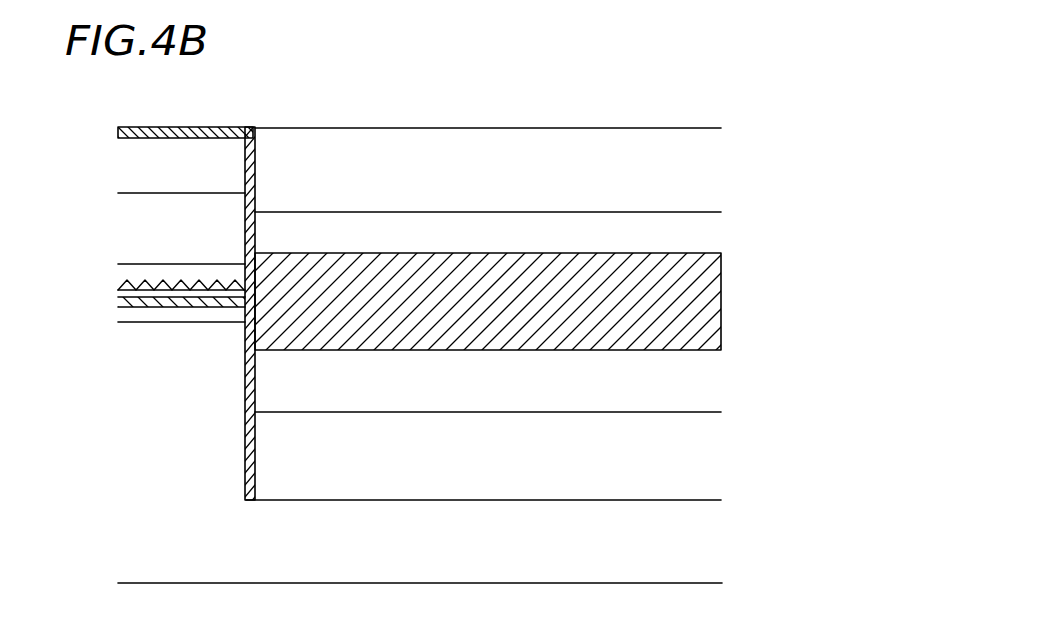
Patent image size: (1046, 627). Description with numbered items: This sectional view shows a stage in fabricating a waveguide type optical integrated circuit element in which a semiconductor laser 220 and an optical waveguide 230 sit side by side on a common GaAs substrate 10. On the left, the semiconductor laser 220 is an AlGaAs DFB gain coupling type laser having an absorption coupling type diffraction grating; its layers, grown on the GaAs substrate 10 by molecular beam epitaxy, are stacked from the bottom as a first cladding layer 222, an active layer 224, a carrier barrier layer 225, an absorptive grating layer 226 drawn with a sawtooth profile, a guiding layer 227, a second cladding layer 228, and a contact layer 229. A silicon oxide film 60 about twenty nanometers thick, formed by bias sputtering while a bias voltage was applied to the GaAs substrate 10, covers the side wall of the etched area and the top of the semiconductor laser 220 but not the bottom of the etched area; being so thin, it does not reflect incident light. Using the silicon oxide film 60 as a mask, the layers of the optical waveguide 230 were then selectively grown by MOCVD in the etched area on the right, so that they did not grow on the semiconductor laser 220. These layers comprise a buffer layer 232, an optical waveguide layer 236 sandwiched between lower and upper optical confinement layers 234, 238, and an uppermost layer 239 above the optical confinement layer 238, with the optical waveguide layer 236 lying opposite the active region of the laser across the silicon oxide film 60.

The GaAs substrate 10 is at (417, 555).
The silicon oxide film 60 is at (256, 162).
The semiconductor laser 220 is at (205, 107).
The first cladding layer 222 is at (138, 320).
The active layer 224 is at (123, 307).
The carrier barrier layer 225 is at (121, 293).
The absorptive grating layer 226 is at (123, 285).
The guiding layer 227 is at (121, 266).
The second cladding layer 228 is at (146, 229).
The contact layer 229 is at (151, 171).
The optical waveguide 230 is at (502, 107).
The buffer layer 232 is at (720, 455).
The optical confinement layer 234 is at (715, 383).
The optical waveguide layer 236 is at (706, 303).
The optical confinement layer 238 is at (695, 233).
The top layer 239 is at (683, 172).